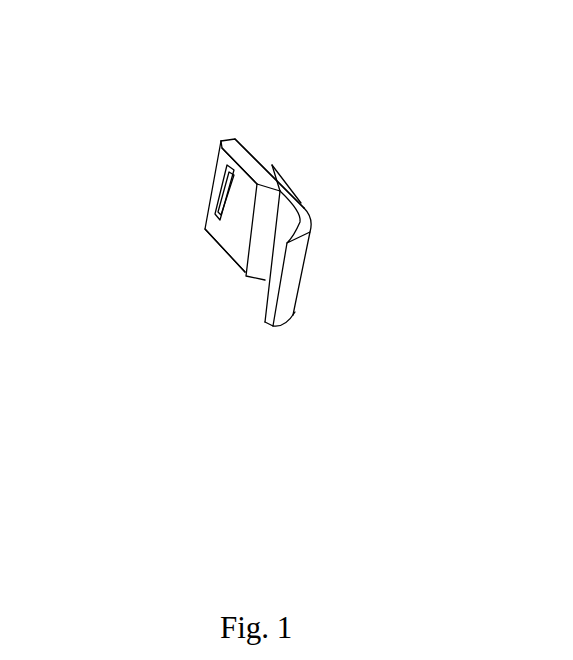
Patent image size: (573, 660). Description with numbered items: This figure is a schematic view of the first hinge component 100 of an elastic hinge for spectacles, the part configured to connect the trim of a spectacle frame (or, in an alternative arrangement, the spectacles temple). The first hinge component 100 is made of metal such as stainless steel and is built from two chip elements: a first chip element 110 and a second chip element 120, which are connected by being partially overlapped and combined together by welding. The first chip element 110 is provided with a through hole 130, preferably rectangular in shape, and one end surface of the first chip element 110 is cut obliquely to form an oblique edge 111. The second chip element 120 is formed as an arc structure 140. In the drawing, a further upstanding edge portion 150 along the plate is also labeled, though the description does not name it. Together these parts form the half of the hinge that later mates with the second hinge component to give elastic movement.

The first hinge component 100 is at (323, 181).
The first chip element 110 is at (237, 245).
The oblique edge 111 is at (258, 243).
The second chip element 120 is at (306, 208).
The through hole 130 is at (212, 193).
The arc structure 140 is at (290, 298).
The flange 150 is at (262, 155).